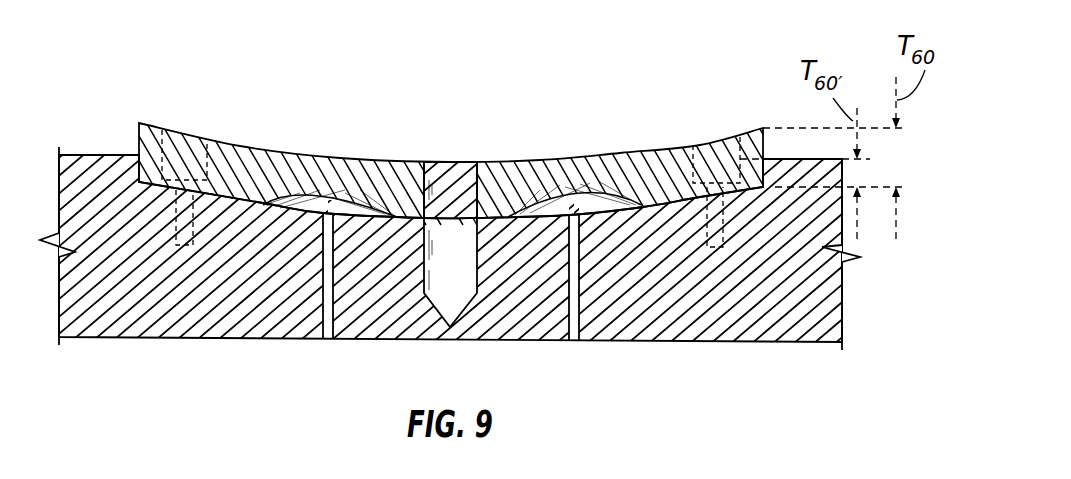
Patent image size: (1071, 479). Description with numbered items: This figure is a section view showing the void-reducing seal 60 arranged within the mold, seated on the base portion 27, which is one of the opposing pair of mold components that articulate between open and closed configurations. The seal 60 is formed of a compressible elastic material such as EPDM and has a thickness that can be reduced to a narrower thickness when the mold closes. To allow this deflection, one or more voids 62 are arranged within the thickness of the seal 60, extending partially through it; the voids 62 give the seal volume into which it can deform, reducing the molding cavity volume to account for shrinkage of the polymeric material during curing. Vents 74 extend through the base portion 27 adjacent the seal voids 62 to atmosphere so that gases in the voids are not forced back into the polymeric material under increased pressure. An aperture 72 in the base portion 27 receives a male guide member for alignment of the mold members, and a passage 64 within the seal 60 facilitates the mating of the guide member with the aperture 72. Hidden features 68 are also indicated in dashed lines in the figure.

The base portion 27 is at (105, 155).
The void-reducing seal 60 is at (405, 157).
The voids 62 is at (280, 206).
The passage 64 is at (480, 177).
The hidden alignment features 68 is at (162, 157).
The aperture 72 is at (478, 280).
The vents 74 is at (335, 313).